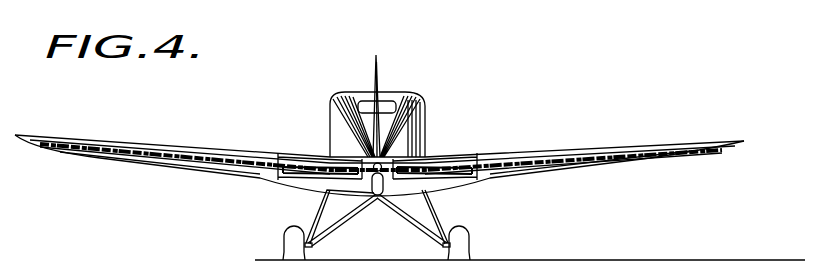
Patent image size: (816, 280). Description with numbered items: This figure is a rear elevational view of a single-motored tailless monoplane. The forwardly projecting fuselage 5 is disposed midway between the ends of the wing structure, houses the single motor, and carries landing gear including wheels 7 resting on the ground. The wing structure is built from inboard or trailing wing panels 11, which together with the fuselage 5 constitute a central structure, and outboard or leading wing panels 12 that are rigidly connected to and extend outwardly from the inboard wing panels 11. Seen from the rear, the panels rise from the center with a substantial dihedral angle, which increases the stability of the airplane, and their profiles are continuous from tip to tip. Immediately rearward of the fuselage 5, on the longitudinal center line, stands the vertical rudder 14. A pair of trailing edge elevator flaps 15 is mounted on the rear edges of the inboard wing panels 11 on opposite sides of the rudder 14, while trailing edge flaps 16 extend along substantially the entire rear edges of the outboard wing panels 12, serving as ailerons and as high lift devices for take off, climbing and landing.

The fuselage 5 is at (424, 113).
The wheels 7 is at (285, 235).
The inboard wing panels 11 is at (290, 157).
The outboard wing panels 12 is at (203, 151).
The rudder 14 is at (380, 82).
The trailing edge elevator flaps 15 is at (313, 160).
The trailing edge flaps 16 is at (147, 148).